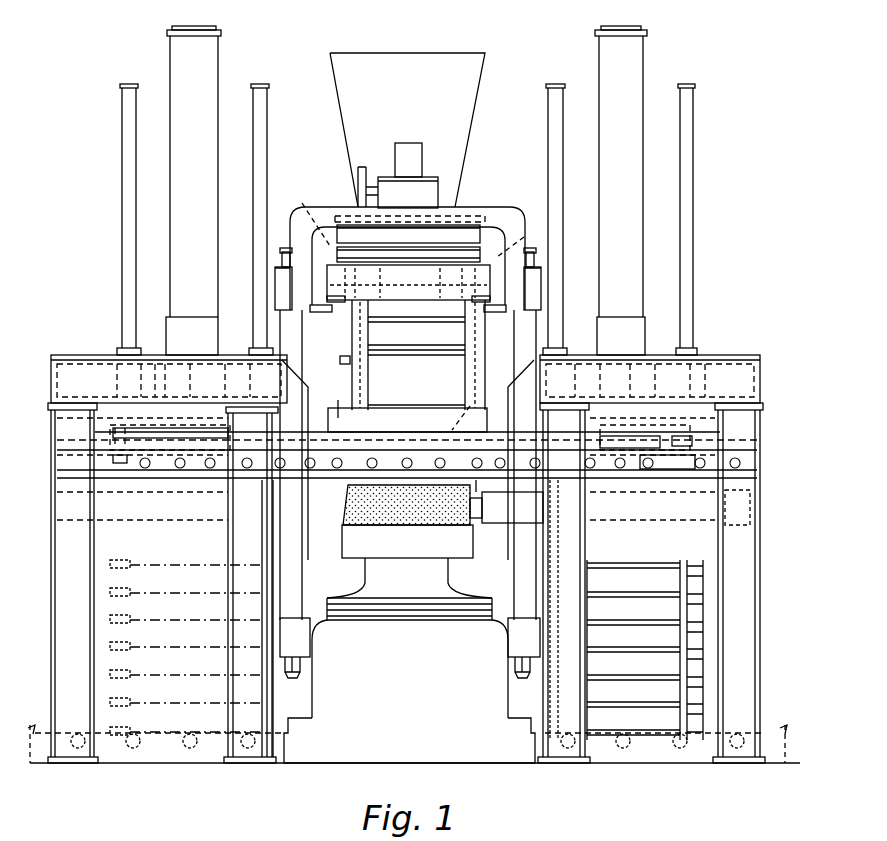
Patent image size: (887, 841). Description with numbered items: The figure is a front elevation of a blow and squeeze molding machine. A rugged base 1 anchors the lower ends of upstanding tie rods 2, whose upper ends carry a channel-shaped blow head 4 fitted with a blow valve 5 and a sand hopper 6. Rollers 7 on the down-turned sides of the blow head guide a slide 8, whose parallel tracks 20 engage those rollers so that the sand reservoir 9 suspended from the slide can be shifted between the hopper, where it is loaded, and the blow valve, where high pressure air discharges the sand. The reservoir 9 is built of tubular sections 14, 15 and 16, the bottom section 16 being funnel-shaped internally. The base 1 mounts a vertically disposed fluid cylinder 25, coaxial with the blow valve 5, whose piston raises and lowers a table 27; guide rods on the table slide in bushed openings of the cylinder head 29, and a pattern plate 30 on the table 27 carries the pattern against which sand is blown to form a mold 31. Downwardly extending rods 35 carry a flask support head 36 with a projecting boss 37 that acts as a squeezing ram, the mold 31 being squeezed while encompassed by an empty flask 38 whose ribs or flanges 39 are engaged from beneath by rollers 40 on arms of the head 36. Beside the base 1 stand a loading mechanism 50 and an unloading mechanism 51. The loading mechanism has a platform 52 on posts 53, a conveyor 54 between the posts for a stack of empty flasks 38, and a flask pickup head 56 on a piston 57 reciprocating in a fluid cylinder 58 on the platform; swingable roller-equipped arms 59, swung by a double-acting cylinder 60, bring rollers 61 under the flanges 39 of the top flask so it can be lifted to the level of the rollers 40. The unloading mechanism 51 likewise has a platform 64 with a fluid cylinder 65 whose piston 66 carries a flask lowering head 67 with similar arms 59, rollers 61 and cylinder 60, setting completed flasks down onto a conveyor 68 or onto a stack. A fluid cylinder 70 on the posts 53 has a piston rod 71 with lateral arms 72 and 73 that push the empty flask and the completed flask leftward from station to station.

The base 1 is at (430, 674).
The tie rods 2 is at (296, 348).
The blow head 4 is at (500, 208).
The blow valve 5 is at (395, 150).
The sand hopper 6 is at (408, 66).
The rollers 7 is at (406, 355).
The slide 8 is at (478, 250).
The sand reservoir 9 is at (430, 376).
The tubular section 14 is at (408, 283).
The tubular section 15 is at (416, 336).
The bottom section 16 is at (416, 390).
The parallel tracks 20 is at (421, 219).
The fluid cylinder 25 is at (488, 607).
The table 27 is at (470, 545).
The cylinder head 29 is at (467, 592).
The pattern plate 30 is at (388, 543).
The mold 31 is at (348, 505).
The rods 35 is at (487, 286).
The flask support head 36 is at (334, 398).
The boss 37 is at (476, 407).
The flask 38 is at (666, 486).
The ribs or flanges 39 is at (679, 650).
The rollers 40 is at (470, 453).
The loading mechanism 50 is at (770, 442).
The unloading mechanism 51 is at (42, 431).
The platform 52 is at (720, 365).
The posts 53 is at (752, 636).
The conveyor 54 is at (777, 725).
The flask pickup head 56 is at (700, 444).
The piston 57 is at (628, 378).
The fluid cylinder 58 is at (633, 241).
The swingable roller-equipped arms 59 is at (127, 461).
The double-acting fluid cylinder 60 is at (113, 432).
The rollers 61 is at (130, 490).
The platform 64 is at (57, 378).
The fluid cylinder 65 is at (172, 213).
The piston 66 is at (188, 352).
The flask lowering head 67 is at (113, 435).
The conveyor 68 is at (35, 725).
The fluid cylinder 70 is at (745, 508).
The piston rod 71 is at (488, 508).
The lateral arm 72 is at (695, 462).
The lateral arm 73 is at (438, 543).